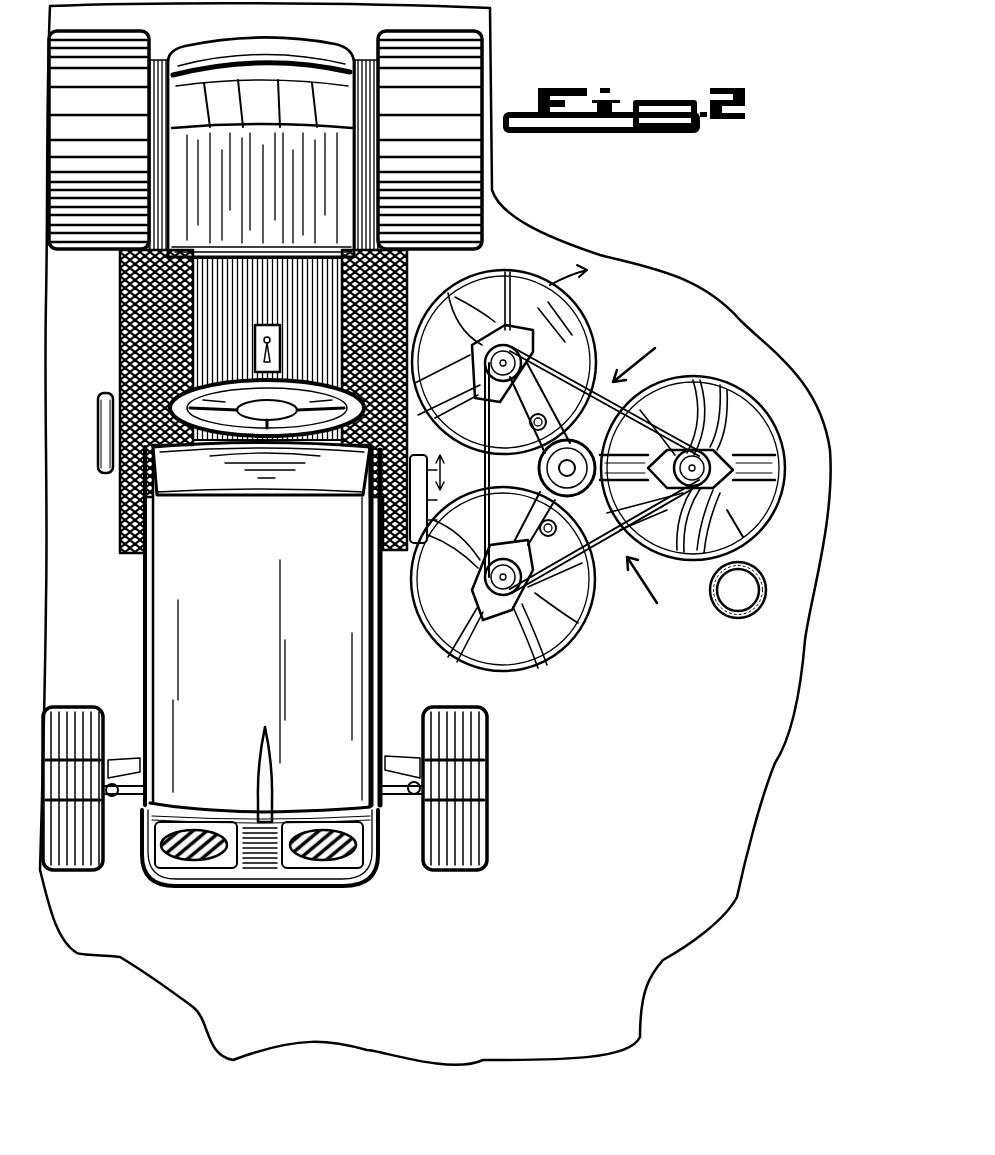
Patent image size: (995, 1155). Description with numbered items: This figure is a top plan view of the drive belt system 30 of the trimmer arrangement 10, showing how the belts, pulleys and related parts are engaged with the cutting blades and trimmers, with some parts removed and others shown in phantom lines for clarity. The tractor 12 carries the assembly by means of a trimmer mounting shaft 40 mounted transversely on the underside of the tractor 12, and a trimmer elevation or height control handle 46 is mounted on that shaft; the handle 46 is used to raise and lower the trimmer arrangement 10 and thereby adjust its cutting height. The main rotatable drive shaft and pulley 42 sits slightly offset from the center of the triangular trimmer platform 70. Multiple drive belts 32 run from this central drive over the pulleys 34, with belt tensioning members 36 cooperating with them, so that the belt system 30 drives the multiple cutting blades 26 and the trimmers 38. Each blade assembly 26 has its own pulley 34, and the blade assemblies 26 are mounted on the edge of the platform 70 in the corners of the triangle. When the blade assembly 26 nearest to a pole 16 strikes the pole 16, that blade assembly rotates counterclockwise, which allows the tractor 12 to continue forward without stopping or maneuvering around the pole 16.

The trimmer arrangement 10 is at (645, 590).
The tractor 12 is at (205, 692).
The pole 16 is at (767, 598).
The cutting blade 26 is at (585, 300).
The drive belt system 30 is at (660, 345).
The drive belt 32 is at (672, 368).
The pulley 34 is at (525, 310).
The belt tensioning member 36 is at (592, 333).
The trimmer 38 is at (500, 290).
The trimmer mounting shaft 40 is at (360, 557).
The main rotatable drive shaft and pulley 42 is at (607, 527).
The trimmer elevation control handle 46 is at (100, 448).
The triangular trimmer platform 70 is at (660, 530).